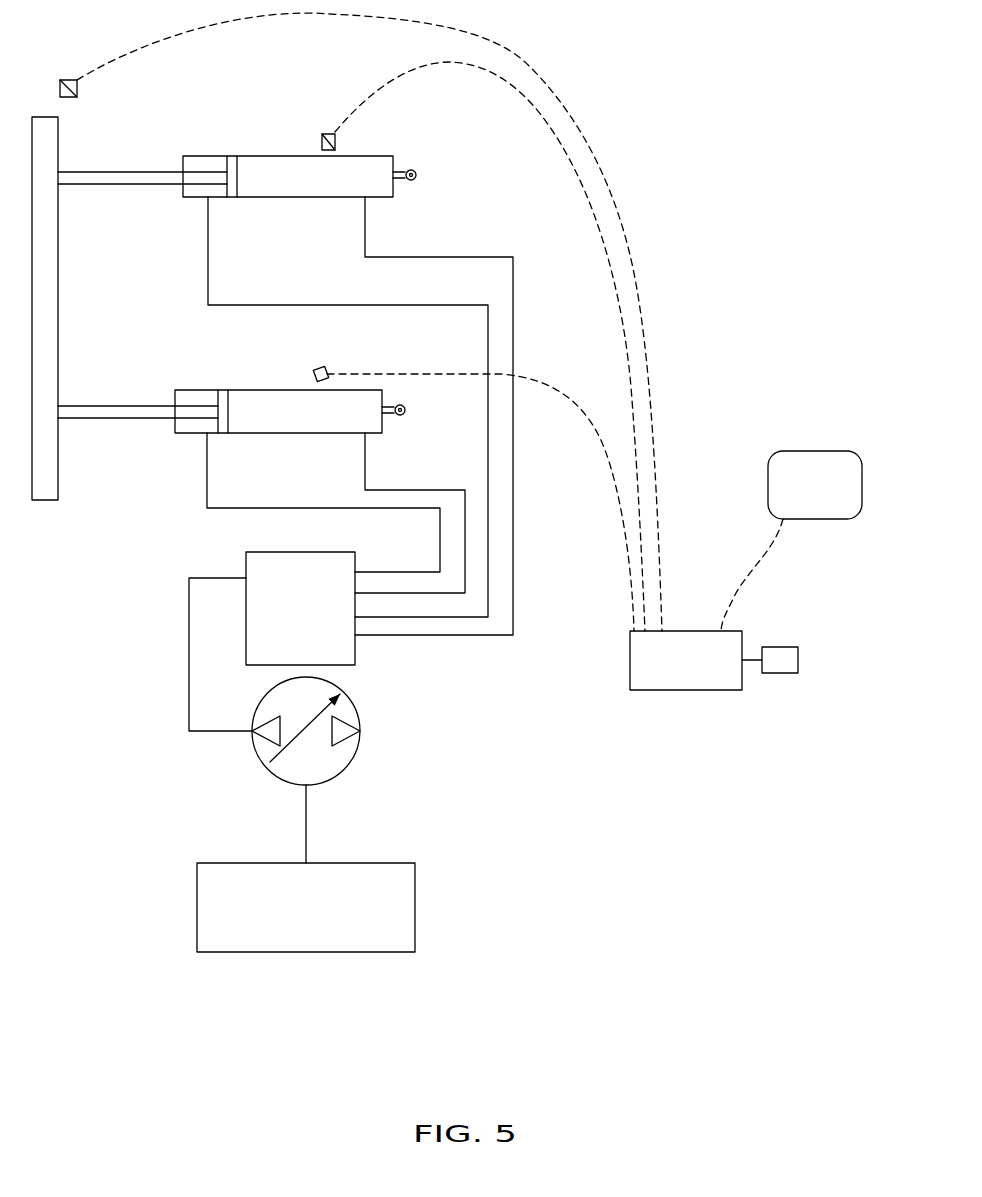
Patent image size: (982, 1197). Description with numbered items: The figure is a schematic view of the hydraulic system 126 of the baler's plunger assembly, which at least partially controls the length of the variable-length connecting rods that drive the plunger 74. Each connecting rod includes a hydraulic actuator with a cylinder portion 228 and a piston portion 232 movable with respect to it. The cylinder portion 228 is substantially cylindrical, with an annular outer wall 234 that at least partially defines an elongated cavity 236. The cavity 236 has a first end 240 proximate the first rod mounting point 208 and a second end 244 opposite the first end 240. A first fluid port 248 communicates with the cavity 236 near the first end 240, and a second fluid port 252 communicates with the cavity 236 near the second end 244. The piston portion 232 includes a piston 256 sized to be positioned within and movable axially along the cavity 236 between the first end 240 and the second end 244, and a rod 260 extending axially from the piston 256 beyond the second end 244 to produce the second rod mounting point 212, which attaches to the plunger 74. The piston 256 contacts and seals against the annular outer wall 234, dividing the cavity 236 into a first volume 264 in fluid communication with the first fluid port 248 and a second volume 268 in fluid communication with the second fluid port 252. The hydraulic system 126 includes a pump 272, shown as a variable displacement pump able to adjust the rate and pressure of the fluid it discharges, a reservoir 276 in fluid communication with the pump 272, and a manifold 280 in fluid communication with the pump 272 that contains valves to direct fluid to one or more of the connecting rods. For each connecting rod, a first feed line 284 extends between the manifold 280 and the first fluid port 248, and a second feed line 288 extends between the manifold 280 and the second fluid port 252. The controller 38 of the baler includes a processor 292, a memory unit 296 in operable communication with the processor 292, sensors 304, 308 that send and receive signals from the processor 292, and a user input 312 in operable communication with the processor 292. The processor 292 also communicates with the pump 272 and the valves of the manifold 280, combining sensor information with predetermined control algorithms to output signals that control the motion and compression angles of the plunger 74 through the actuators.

The controller 38 is at (647, 714).
The plunger 74 is at (50, 280).
The hydraulic system 126 is at (673, 116).
The first rod mounting point 208 is at (417, 177).
The second rod mounting point 212 is at (62, 175).
The cylinder portion 228 is at (345, 155).
The piston portion 232 is at (122, 170).
The annular outer wall 234 is at (293, 153).
The elongated cavity 236 is at (292, 185).
The first end 240 is at (392, 167).
The second end 244 is at (183, 197).
The first fluid port 248 is at (377, 200).
The second fluid port 252 is at (208, 200).
The piston 256 is at (233, 165).
The rod 260 is at (97, 175).
The first volume 264 is at (345, 176).
The second volume 268 is at (205, 158).
The pump 272 is at (350, 762).
The reservoir 276 is at (405, 903).
The manifold 280 is at (355, 647).
The first feed line 284 is at (513, 275).
The second feed line 288 is at (490, 347).
The processor 292 is at (690, 690).
The memory unit 296 is at (800, 653).
The sensor 304 is at (62, 78).
The sensor 308 is at (325, 133).
The user input 312 is at (827, 462).